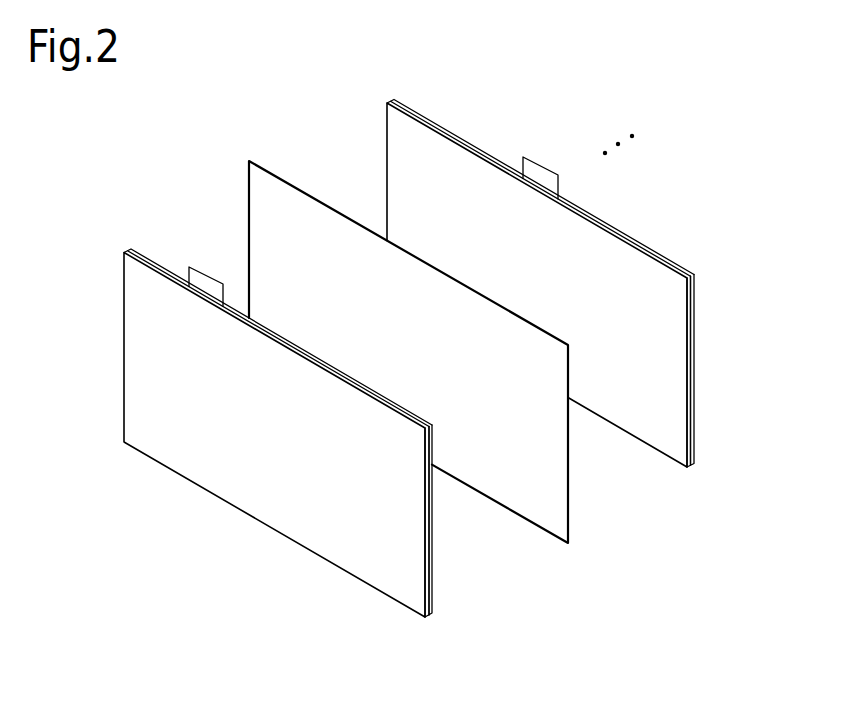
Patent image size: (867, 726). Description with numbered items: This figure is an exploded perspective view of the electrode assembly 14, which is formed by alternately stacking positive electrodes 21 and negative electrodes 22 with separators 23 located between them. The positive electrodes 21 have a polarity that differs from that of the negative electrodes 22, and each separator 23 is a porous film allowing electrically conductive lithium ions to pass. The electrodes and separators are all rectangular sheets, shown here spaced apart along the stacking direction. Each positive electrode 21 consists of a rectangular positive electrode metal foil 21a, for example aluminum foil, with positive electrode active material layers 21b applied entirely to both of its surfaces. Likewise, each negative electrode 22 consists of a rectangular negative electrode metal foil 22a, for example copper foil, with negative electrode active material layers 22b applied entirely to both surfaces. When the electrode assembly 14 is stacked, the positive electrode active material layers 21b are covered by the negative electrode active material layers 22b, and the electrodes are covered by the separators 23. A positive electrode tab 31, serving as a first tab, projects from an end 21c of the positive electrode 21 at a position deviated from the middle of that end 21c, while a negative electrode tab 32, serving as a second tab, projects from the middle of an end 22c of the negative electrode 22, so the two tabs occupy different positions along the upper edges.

The electrode assembly 14 is at (717, 104).
The positive electrode 21 is at (284, 413).
The positive electrode metal foil 21a is at (430, 531).
The positive electrode active material layers 21b is at (417, 572).
The end of the positive electrode 21c is at (150, 262).
The negative electrode 22 is at (548, 284).
The negative electrode metal foil 22a is at (694, 296).
The negative electrode active material layers 22b is at (681, 333).
The end of the negative electrode 22c is at (474, 148).
The separator 23 is at (249, 205).
The positive electrode tab 31 is at (207, 285).
The negative electrode tab 32 is at (543, 175).